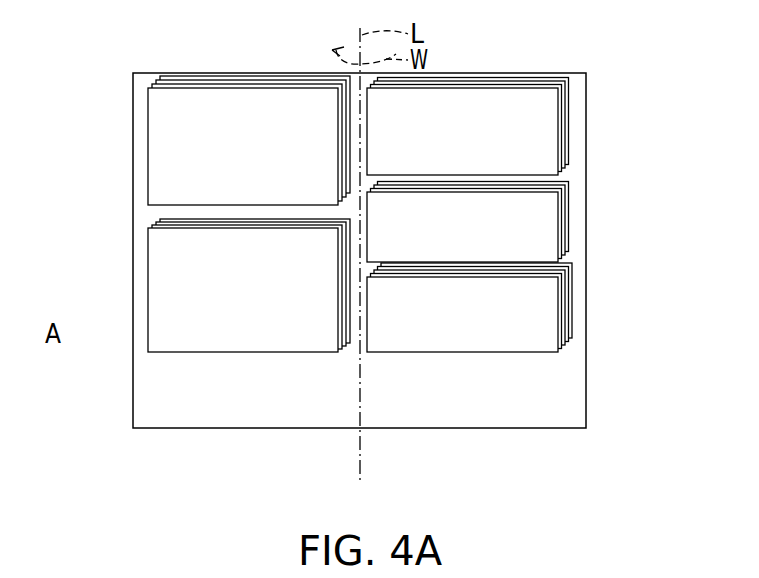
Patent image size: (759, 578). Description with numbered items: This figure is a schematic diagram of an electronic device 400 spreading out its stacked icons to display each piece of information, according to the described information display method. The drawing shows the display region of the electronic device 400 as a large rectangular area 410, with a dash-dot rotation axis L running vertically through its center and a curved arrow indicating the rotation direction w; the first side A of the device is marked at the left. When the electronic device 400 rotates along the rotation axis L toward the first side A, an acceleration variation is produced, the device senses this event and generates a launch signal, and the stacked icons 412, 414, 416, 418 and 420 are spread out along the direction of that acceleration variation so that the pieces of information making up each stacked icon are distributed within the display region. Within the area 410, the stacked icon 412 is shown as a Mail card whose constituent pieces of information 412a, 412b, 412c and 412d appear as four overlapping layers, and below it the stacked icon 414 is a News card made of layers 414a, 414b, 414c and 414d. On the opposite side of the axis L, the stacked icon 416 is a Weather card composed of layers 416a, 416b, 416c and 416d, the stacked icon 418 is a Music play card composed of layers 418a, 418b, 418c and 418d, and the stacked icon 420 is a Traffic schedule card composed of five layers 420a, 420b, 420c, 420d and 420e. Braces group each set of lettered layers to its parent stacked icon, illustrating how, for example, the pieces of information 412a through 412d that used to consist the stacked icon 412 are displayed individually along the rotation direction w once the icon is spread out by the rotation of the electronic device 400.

The electronic device 400 is at (359, 252).
The display frame 410 is at (586, 390).
The stacked icon 412 is at (185, 117).
The piece of information 412a is at (203, 146).
The piece of information 412b is at (152, 86).
The piece of information 412c is at (156, 82).
The piece of information 412d is at (160, 78).
The stacked icon 414 is at (185, 262).
The news page layer 414a is at (203, 290).
The news page layer 414b is at (152, 227).
The news page layer 414c is at (156, 224).
The news page layer 414d is at (160, 221).
The stacked icon 416 is at (532, 104).
The weather page layer 416a is at (552, 118).
The weather page layer 416b is at (561, 85).
The weather page layer 416c is at (565, 82).
The weather page layer 416d is at (568, 78).
The stacked icon 418 is at (532, 198).
The music play page layer 418a is at (552, 222).
The music play page layer 418b is at (561, 189).
The music play page layer 418c is at (565, 185).
The music play page layer 418d is at (568, 182).
The stacked icon 420 is at (532, 300).
The traffic schedule page layer 420a is at (509, 319).
The traffic schedule page layer 420b is at (561, 290).
The traffic schedule page layer 420c is at (565, 280).
The traffic schedule page layer 420d is at (568, 270).
The traffic schedule page layer 420e is at (572, 265).